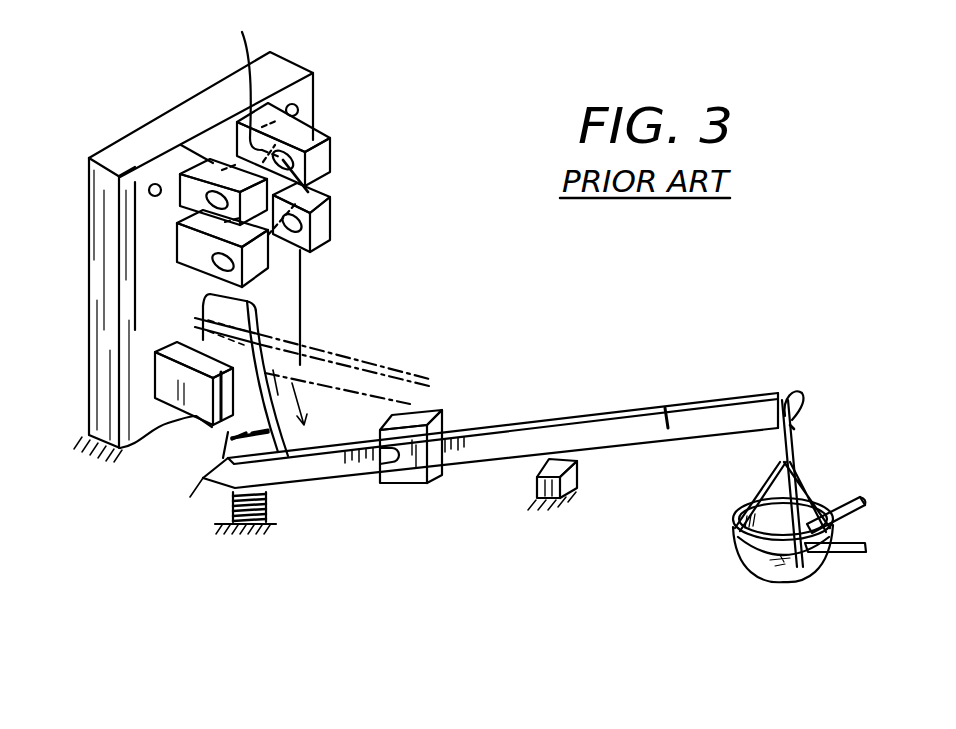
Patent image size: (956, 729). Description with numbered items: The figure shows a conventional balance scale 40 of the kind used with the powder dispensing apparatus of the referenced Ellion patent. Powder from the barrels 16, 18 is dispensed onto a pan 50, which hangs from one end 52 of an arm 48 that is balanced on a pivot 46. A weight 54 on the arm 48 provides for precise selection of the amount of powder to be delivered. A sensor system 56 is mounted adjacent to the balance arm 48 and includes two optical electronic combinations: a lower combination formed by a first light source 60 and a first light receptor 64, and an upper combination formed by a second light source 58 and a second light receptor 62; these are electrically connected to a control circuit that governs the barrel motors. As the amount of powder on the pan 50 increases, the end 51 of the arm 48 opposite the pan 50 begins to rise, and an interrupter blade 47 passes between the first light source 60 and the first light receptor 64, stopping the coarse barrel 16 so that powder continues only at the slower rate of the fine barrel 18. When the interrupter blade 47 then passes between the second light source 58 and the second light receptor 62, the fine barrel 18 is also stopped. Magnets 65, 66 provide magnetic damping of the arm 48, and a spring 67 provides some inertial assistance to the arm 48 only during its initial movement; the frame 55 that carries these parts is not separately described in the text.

The barrel 16 is at (844, 503).
The barrel 18 is at (853, 558).
The balance scale 40 is at (605, 352).
The pivot 46 is at (574, 474).
The interrupter blade 47 is at (160, 477).
The arm 48 is at (318, 488).
The pan 50 is at (758, 571).
The end of the arm 51 is at (208, 481).
The end of the arm 52 is at (790, 395).
The weight 54 is at (410, 481).
The frame 55 is at (218, 81).
The sensor system 56 is at (380, 158).
The second light source 58 is at (181, 170).
The first light source 60 is at (218, 272).
The second light receptor 62 is at (314, 138).
The first light receptor 64 is at (331, 215).
The magnet 65 is at (168, 396).
The magnet 66 is at (276, 375).
The spring 67 is at (220, 503).